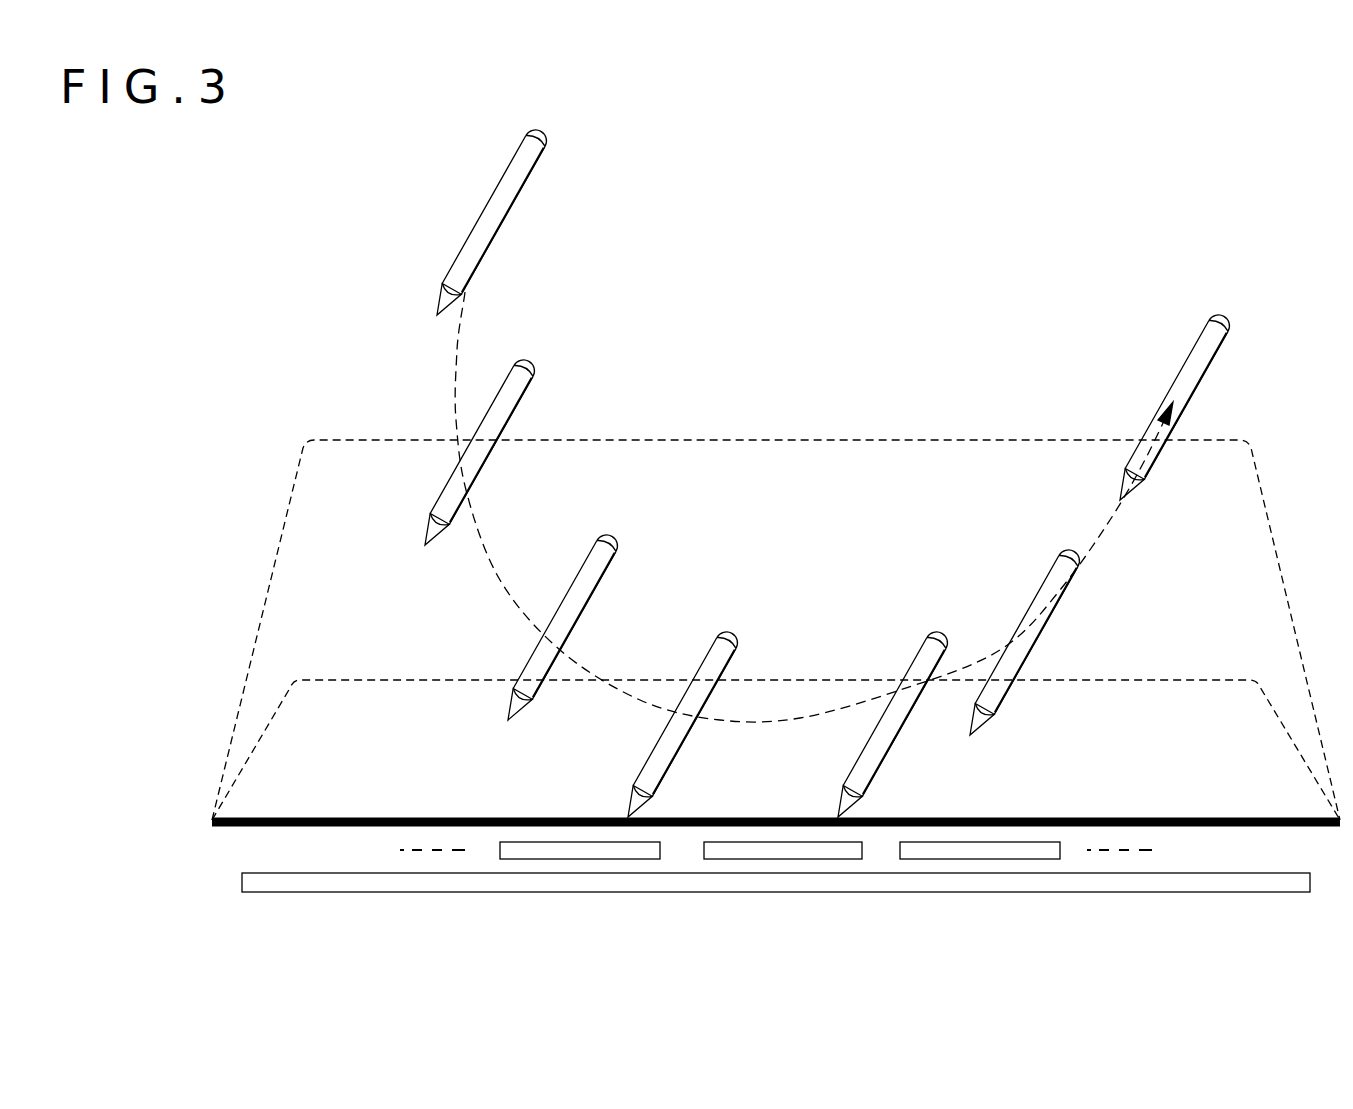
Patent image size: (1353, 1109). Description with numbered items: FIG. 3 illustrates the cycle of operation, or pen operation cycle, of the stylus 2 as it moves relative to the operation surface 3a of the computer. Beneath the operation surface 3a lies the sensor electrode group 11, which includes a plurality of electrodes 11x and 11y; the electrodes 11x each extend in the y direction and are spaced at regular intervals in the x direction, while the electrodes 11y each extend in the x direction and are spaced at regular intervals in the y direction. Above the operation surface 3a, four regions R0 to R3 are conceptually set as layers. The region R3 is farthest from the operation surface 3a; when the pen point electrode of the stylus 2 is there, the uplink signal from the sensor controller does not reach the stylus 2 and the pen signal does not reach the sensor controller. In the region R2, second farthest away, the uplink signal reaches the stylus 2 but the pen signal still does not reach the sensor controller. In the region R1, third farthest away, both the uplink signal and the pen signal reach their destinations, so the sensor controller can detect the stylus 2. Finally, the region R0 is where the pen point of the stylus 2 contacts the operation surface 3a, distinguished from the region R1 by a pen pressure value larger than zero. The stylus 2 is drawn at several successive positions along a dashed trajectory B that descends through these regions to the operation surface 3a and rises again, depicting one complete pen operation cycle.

The stylus 2 is at (538, 128).
The operation surface 3a is at (1183, 818).
The sensor electrode group 11 is at (776, 914).
The electrodes 11x is at (1050, 882).
The electrodes 11y is at (987, 850).
The pen trajectory B is at (454, 387).
The region R0 is at (206, 821).
The region R1 is at (370, 747).
The region R2 is at (370, 569).
The region R3 is at (370, 359).